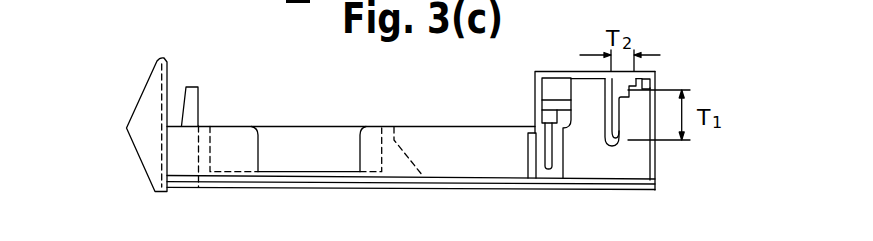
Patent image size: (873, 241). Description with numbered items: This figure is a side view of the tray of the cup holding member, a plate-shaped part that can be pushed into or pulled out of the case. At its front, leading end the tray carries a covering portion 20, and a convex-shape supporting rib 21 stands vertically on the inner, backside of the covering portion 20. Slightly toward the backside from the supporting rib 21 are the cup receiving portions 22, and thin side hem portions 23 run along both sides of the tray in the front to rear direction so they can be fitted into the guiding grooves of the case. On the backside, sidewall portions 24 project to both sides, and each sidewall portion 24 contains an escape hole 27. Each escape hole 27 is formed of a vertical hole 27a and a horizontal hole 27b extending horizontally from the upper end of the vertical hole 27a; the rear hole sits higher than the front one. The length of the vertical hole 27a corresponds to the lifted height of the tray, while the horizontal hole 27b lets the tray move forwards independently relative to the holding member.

The covering portion 20 is at (148, 97).
The supporting rib 21 is at (196, 98).
The cup receiving portions 22 is at (308, 138).
The side hem portions 23 is at (380, 188).
The sidewall portions 24 is at (655, 159).
The escape hole 27 is at (443, 50).
The vertical hole 27a is at (550, 138).
The horizontal hole 27b is at (560, 113).